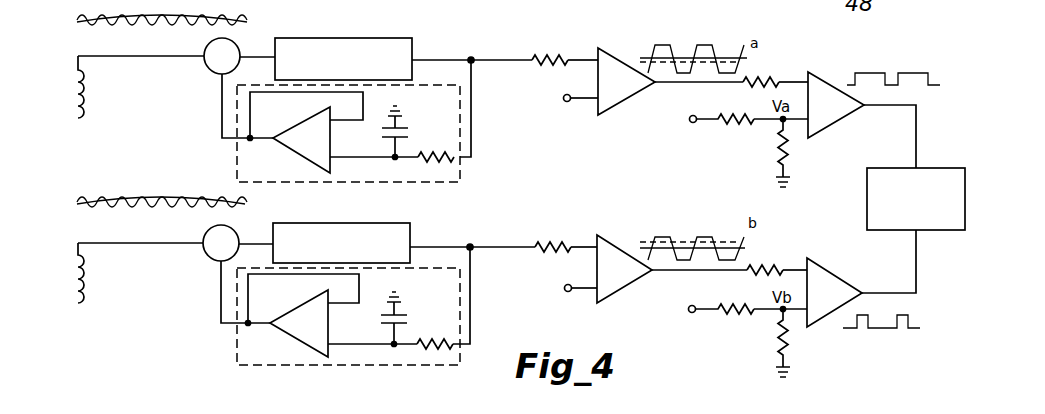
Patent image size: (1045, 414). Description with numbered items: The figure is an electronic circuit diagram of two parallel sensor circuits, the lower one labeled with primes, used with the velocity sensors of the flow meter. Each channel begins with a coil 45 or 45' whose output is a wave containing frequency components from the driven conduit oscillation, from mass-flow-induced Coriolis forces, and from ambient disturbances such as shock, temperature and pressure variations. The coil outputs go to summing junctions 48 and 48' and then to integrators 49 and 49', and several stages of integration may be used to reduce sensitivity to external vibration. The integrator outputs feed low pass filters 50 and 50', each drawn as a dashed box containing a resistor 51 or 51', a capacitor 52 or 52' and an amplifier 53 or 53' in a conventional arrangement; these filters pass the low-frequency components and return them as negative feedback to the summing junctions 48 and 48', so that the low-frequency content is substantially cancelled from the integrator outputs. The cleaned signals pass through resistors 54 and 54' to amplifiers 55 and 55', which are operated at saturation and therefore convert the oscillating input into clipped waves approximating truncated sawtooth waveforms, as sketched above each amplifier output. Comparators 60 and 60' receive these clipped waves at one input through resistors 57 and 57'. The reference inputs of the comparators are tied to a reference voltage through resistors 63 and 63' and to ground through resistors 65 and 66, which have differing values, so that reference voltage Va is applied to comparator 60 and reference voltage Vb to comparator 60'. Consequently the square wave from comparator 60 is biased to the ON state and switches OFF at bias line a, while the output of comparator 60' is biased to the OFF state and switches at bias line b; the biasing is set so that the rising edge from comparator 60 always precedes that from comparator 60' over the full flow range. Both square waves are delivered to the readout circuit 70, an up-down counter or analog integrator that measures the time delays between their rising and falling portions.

The velocity sensor coil 45 is at (105, 88).
The summing junction 48 is at (201, 68).
The integrator 49 is at (343, 44).
The low pass filter 50 is at (348, 147).
The resistor 51 is at (436, 145).
The capacitor 52 is at (372, 131).
The amplifier 53 is at (302, 134).
The resistor 54 is at (560, 43).
The amplifier 55 is at (610, 68).
The resistor 57 is at (771, 65).
The comparator 60 is at (845, 111).
The resistor 63 is at (722, 139).
The resistor 65 is at (790, 156).
The readout circuit 70 is at (867, 215).
The velocity sensor coil 45' is at (106, 276).
The summing junction 48' is at (200, 257).
The integrator 49' is at (341, 227).
The low pass filter 50' is at (320, 316).
The resistor 51' is at (436, 326).
The capacitor 52' is at (373, 318).
The amplifier 53' is at (300, 317).
The resistor 54' is at (565, 229).
The amplifier 55' is at (613, 279).
The resistor 57' is at (775, 256).
The comparator 60' is at (848, 292).
The resistor 63' is at (722, 329).
The resistor 66 is at (790, 344).